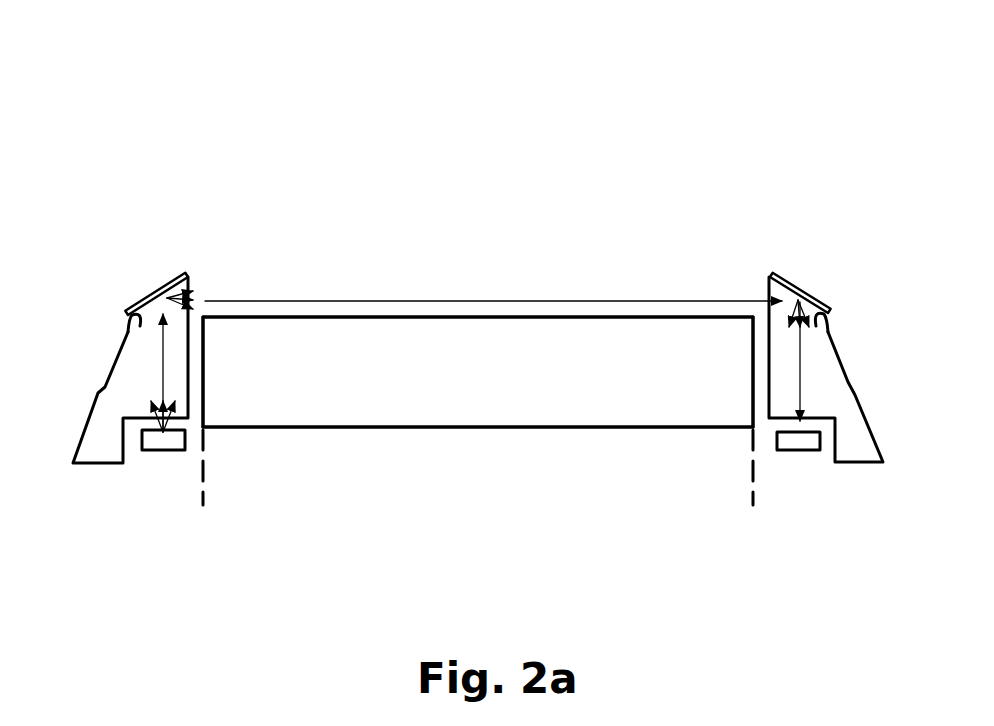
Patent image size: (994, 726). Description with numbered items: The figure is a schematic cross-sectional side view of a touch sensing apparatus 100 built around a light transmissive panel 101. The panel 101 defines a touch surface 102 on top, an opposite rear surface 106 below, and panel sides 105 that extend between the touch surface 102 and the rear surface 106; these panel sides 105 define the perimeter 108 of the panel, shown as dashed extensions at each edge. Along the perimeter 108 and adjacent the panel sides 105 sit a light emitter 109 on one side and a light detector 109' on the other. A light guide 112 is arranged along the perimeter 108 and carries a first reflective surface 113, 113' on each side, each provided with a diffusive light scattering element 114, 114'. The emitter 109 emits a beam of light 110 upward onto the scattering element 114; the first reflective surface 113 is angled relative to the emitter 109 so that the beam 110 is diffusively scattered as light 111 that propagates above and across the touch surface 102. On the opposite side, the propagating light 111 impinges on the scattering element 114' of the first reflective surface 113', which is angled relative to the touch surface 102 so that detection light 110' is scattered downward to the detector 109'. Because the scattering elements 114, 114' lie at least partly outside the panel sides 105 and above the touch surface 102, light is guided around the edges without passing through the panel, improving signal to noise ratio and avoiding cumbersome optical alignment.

The touch sensing apparatus 100 is at (179, 100).
The light transmissive panel 101 is at (503, 428).
The touch surface 102 is at (403, 317).
The panel sides 105 is at (203, 397).
The rear surface 106 is at (405, 428).
The perimeter 108 is at (203, 489).
The light emitter 109 is at (135, 486).
The light detector 109' is at (832, 502).
The beam of light 110 is at (113, 361).
The detection light 110' is at (862, 360).
The scattered light 111 is at (267, 302).
The light guide 112 is at (113, 465).
The first reflective surface 113 is at (87, 329).
The first reflective surface 113' is at (871, 328).
The diffusive light scattering element 114 is at (129, 281).
The diffusive light scattering element 114' is at (825, 278).